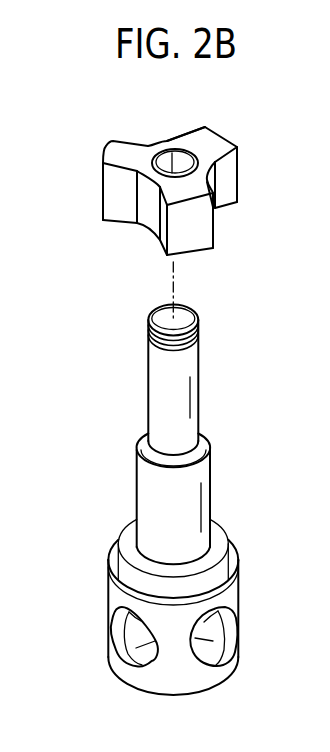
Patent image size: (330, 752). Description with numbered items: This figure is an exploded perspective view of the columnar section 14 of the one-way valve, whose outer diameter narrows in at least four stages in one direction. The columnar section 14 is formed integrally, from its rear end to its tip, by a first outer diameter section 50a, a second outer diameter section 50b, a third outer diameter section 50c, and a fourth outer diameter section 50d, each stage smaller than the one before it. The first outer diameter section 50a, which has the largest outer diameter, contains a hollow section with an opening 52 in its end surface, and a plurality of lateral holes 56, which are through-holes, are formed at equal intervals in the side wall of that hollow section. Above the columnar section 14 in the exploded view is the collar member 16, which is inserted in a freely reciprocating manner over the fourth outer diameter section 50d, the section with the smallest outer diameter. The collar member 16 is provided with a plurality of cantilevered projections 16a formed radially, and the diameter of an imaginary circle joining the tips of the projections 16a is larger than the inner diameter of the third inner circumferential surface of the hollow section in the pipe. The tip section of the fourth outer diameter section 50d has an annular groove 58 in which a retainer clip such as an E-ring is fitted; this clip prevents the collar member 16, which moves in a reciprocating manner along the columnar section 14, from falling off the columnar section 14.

The columnar section 14 is at (68, 102).
The collar member 16 is at (207, 172).
The cantilevered projections 16a is at (205, 127).
The annular groove 58 is at (200, 346).
The fourth outer diameter section 50d is at (159, 380).
The third outer diameter section 50c is at (137, 495).
The second outer diameter section 50b is at (128, 543).
The first outer diameter section 50a is at (117, 661).
The opening 52 is at (200, 651).
The lateral holes 56 is at (227, 633).